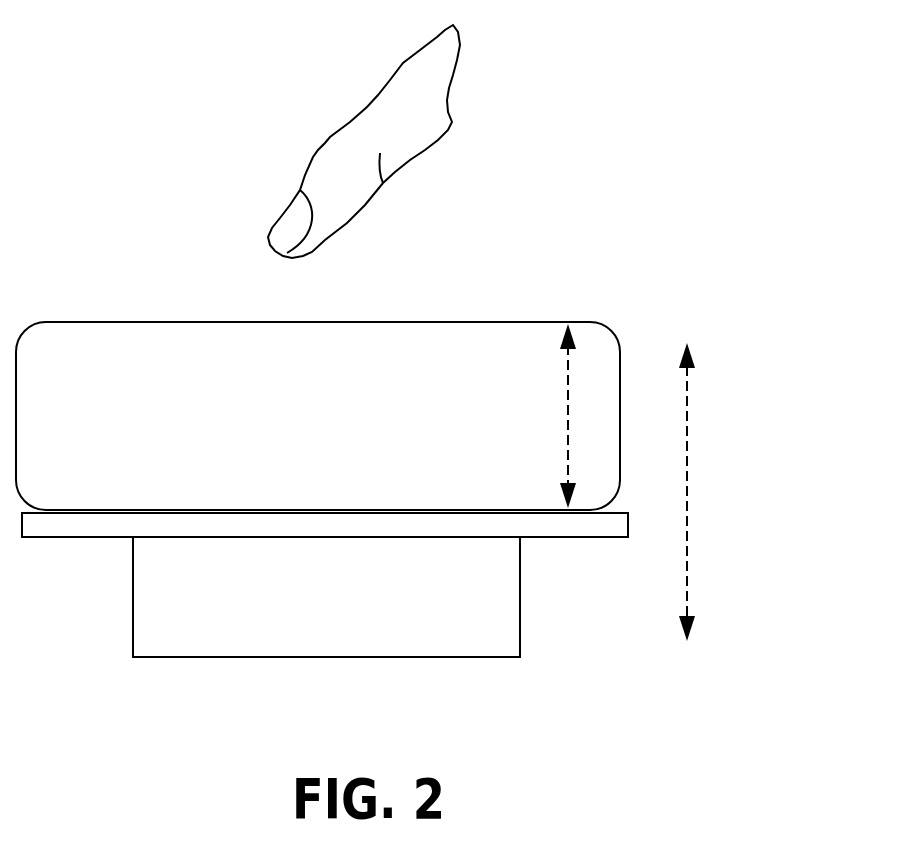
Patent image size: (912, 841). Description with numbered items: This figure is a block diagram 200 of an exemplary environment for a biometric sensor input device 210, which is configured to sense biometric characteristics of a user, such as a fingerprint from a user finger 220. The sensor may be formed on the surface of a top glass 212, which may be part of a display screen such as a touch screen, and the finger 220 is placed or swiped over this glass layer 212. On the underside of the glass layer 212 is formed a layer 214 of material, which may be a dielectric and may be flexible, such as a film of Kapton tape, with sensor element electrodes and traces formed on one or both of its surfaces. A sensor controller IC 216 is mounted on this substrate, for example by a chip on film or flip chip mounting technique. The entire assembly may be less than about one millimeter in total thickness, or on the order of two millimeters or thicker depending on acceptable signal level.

The block diagram 200 is at (426, 397).
The biometric sensor input device 210 is at (426, 437).
The top glass 212 is at (92, 320).
The layer of material 214 is at (585, 538).
The sensor controller IC 216 is at (205, 645).
The user finger 220 is at (325, 143).